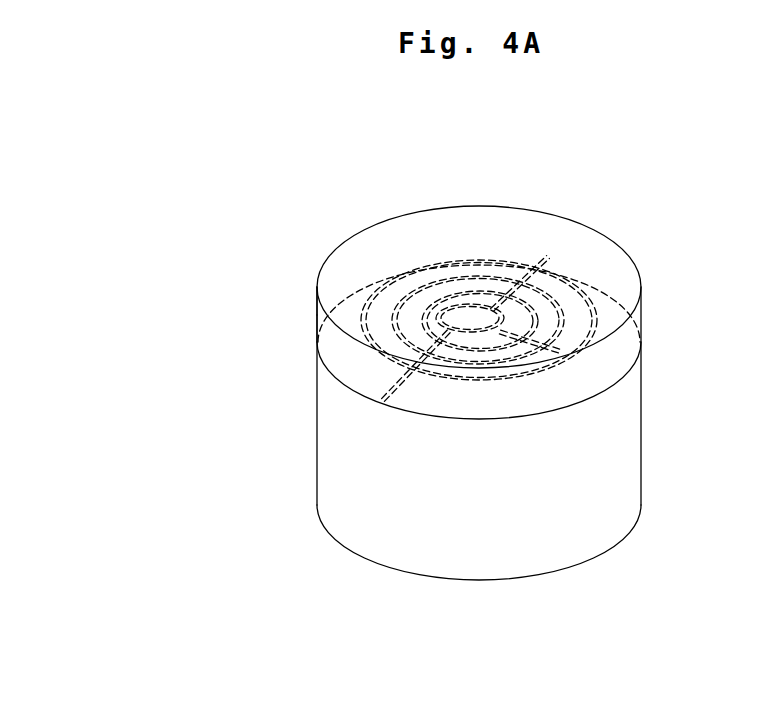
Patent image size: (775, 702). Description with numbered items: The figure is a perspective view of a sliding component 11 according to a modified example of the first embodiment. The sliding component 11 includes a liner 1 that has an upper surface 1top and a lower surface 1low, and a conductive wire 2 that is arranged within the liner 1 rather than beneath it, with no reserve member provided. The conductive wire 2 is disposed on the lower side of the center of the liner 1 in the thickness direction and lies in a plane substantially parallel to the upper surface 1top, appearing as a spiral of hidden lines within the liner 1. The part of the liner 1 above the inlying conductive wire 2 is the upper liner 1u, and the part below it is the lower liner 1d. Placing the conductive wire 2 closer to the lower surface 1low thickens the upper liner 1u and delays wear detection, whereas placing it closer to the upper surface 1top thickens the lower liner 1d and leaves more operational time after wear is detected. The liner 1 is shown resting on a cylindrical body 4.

The sliding component 11 is at (474, 305).
The liner 1 is at (474, 307).
The upper surface 1top is at (553, 240).
The lower surface 1low is at (585, 404).
The upper liner 1u is at (300, 292).
The lower liner 1d is at (303, 345).
The conductive wire 2 is at (562, 352).
The cylindrical base 4 is at (613, 487).